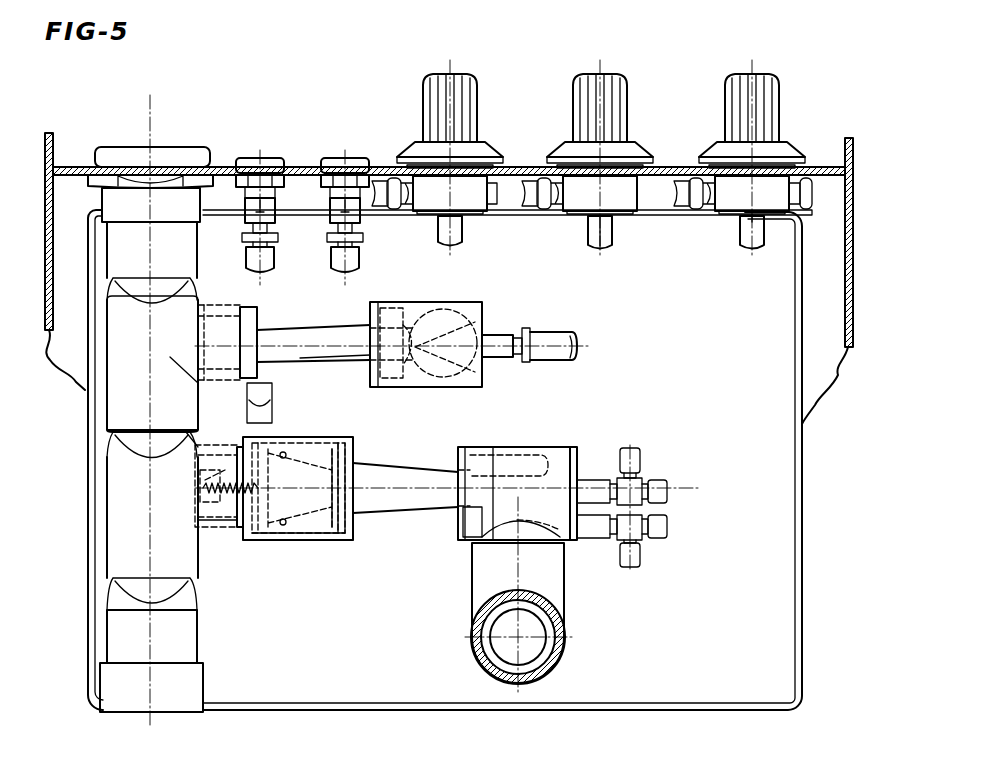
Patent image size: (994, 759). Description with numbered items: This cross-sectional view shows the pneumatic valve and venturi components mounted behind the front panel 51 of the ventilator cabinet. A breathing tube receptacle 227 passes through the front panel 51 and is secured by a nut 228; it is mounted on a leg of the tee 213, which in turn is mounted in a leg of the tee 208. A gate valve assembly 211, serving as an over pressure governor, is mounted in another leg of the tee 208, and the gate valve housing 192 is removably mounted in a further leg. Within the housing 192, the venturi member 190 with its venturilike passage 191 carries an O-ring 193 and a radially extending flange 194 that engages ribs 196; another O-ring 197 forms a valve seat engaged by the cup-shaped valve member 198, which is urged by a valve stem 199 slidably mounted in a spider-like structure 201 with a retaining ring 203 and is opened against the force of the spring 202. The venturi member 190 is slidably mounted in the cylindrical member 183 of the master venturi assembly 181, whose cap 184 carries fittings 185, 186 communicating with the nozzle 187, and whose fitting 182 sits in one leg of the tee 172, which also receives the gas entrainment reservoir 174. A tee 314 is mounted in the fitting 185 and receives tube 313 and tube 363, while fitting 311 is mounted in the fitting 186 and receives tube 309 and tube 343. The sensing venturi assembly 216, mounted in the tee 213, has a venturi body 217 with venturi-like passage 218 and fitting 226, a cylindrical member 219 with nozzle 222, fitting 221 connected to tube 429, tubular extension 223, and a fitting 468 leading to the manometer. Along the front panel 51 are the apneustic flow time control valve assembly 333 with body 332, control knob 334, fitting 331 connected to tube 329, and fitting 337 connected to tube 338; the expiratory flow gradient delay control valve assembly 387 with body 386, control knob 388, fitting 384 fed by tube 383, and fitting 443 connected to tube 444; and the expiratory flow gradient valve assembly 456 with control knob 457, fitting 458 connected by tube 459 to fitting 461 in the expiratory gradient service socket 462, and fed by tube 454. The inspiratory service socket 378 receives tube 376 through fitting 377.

The front panel 51 is at (96, 168).
The gas entrainment reservoir 174 is at (330, 710).
The breathing tube receptacle 227 is at (142, 155).
The nut 228 is at (170, 180).
The tee 208 is at (110, 513).
The tee 213 is at (110, 377).
The gate valve assembly 211 is at (188, 648).
The venturi-like passage 218 is at (298, 322).
The fitting 468 is at (267, 413).
The venturi body 217 is at (360, 331).
The tube 459 is at (343, 275).
The fitting 226 is at (365, 358).
The sensing venturi assembly 216 is at (384, 392).
The cylindrical member 219 is at (418, 303).
The tubular extension 223 is at (458, 322).
The nozzle 222 is at (482, 332).
The fitting 221 is at (503, 350).
The tube 429 is at (570, 342).
The spider-like structure 201 is at (197, 432).
The spring 202 is at (207, 447).
The retaining ring 203 is at (197, 480).
The ribs 196 is at (277, 437).
The valve stem 199 is at (197, 520).
The cup-shaped valve member 198 is at (263, 540).
The O-ring 197 is at (277, 543).
The radially extending flange 194 is at (297, 547).
The gate valve housing 192 is at (310, 543).
The O-ring 193 is at (343, 533).
The venturi member 190 is at (400, 463).
The venturi-like passage 191 is at (425, 480).
The cylindrical member 183 is at (483, 447).
The master venturi assembly 181 is at (518, 438).
The nozzle 187 is at (530, 472).
The cap 184 is at (573, 458).
The fitting 185 is at (590, 483).
The fitting 186 is at (597, 538).
The tube 313 is at (640, 453).
The tee 314 is at (642, 475).
The tube 363 is at (667, 490).
The tube 343 is at (667, 527).
The fitting 311 is at (638, 533).
The tube 309 is at (635, 563).
The fitting 182 is at (500, 537).
The tee 172 is at (557, 600).
The inspiratory service socket 378 is at (260, 159).
The fitting 377 is at (265, 240).
The tube 376 is at (262, 270).
The expiratory gradient service socket 462 is at (345, 159).
The fitting 461 is at (358, 258).
The expiratory flow gradient valve assembly 456 is at (453, 107).
The control knob 457 is at (465, 112).
The fitting 458 is at (395, 185).
The tube 454 is at (447, 240).
The control knob 388 is at (600, 111).
The expiratory flow gradient delay control valve assembly 387 is at (570, 152).
The body 386 is at (592, 205).
The tube 383 is at (530, 182).
The fitting 384 is at (552, 198).
The tube 444 is at (600, 249).
The fitting 443 is at (605, 234).
The apneustic flow time control valve assembly 333 is at (753, 113).
The control knob 334 is at (730, 112).
The body 332 is at (775, 212).
The tube 329 is at (680, 205).
The fitting 331 is at (702, 205).
The fitting 337 is at (748, 220).
The tube 338 is at (747, 252).